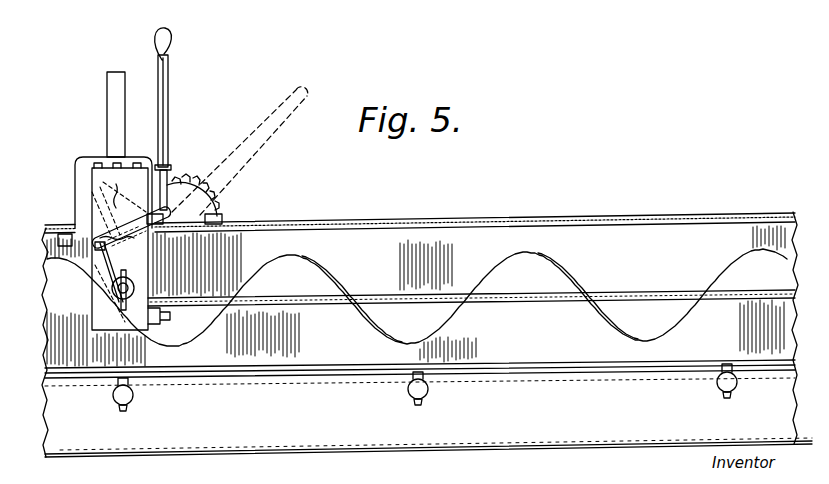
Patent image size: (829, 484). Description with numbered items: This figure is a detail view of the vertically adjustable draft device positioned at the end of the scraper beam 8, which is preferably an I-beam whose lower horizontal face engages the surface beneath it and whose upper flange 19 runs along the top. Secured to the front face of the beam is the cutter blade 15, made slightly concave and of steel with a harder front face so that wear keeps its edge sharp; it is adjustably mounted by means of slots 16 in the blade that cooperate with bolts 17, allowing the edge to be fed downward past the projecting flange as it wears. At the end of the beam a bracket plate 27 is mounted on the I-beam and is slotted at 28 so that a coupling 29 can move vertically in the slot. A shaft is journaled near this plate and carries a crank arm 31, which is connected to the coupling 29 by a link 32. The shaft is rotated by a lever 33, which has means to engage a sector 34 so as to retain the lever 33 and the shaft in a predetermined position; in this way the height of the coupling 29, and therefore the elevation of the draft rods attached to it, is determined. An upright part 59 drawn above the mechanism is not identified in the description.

The scraper beam 8 is at (387, 245).
The upper flange 19 is at (637, 223).
The cutter blade 15 is at (307, 440).
The slot 16 is at (727, 392).
The bolt 17 is at (718, 382).
The standard post 59 is at (110, 110).
The crank arm 31 is at (113, 243).
The lever 33 is at (168, 110).
The sector 34 is at (210, 207).
The slot 28 is at (120, 268).
The bracket plate 27 is at (100, 312).
The link 32 is at (93, 268).
The coupling 29 is at (150, 318).